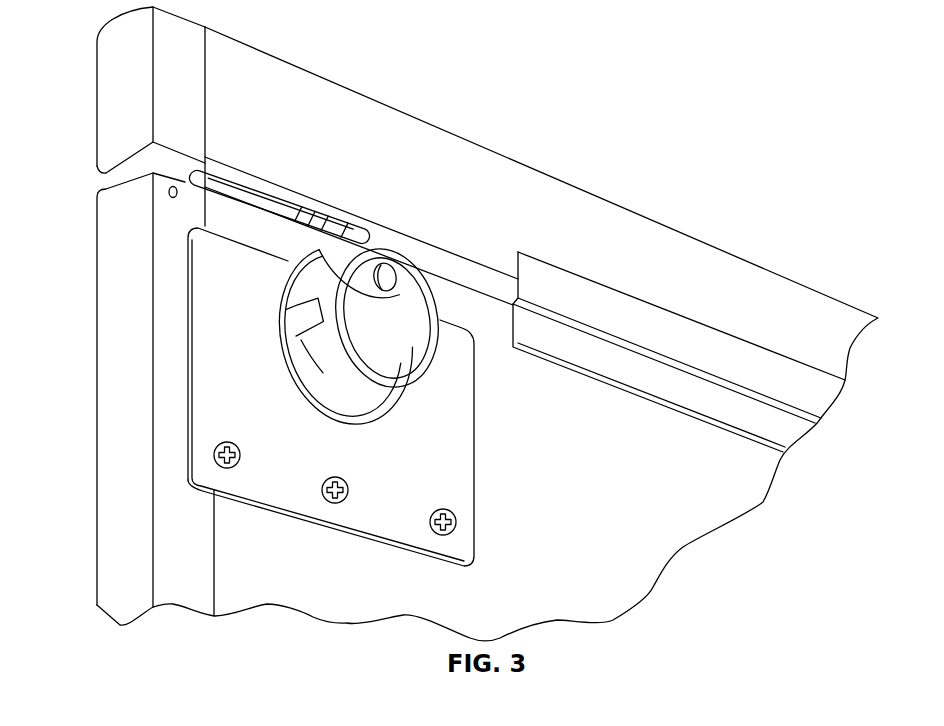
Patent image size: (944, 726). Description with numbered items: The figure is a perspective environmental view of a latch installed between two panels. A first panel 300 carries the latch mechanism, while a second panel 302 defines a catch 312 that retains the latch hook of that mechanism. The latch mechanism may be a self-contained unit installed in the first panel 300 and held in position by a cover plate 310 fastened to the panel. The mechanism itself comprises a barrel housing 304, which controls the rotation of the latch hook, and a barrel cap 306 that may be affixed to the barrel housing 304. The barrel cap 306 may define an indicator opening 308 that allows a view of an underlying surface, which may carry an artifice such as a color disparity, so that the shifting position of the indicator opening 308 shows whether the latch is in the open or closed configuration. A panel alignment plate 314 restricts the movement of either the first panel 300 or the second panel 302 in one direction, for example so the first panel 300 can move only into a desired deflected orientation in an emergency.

The first panel 300 is at (120, 333).
The second panel 302 is at (125, 117).
The barrel housing 304 is at (333, 363).
The barrel cap 306 is at (407, 335).
The indicator opening 308 is at (390, 272).
The cover plate 310 is at (463, 465).
The catch 312 is at (217, 182).
The panel alignment plate 314 is at (573, 305).